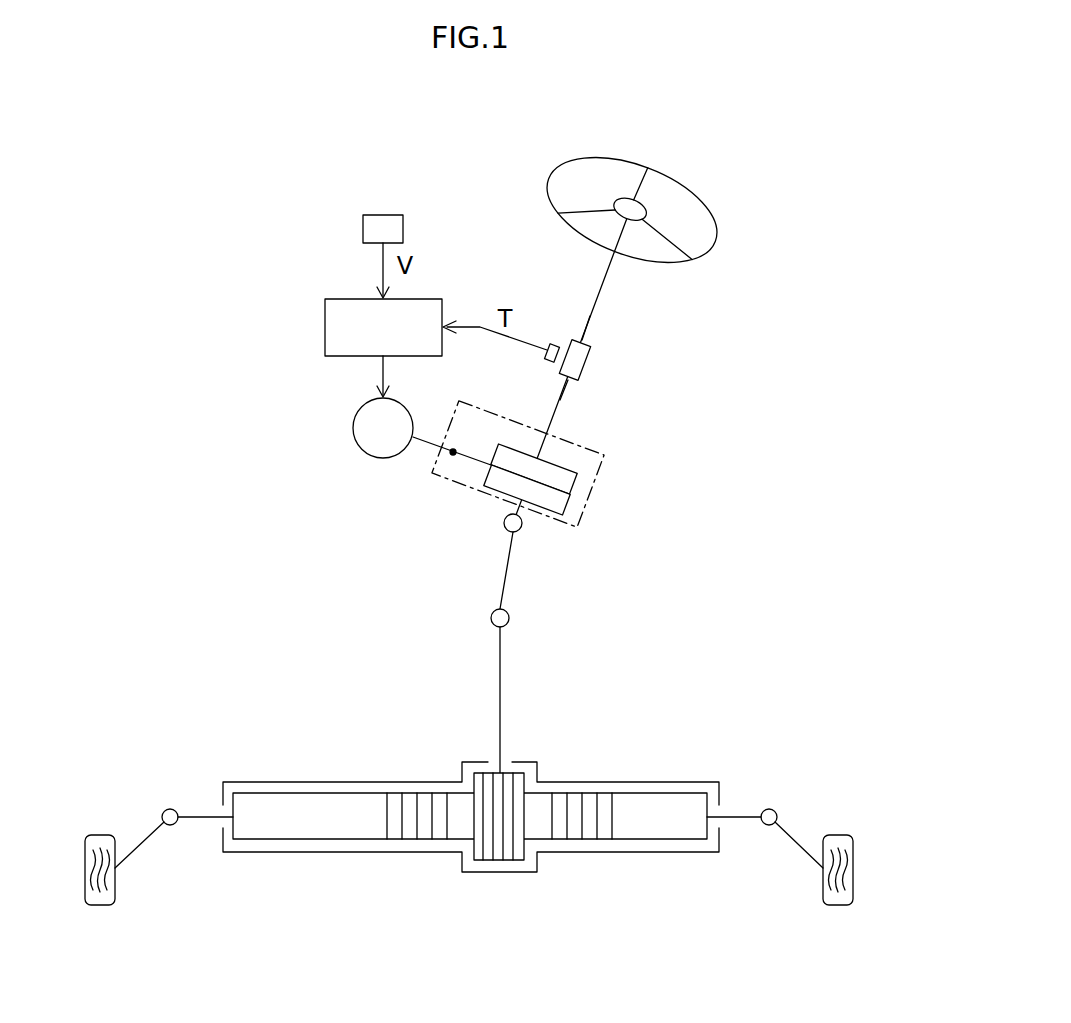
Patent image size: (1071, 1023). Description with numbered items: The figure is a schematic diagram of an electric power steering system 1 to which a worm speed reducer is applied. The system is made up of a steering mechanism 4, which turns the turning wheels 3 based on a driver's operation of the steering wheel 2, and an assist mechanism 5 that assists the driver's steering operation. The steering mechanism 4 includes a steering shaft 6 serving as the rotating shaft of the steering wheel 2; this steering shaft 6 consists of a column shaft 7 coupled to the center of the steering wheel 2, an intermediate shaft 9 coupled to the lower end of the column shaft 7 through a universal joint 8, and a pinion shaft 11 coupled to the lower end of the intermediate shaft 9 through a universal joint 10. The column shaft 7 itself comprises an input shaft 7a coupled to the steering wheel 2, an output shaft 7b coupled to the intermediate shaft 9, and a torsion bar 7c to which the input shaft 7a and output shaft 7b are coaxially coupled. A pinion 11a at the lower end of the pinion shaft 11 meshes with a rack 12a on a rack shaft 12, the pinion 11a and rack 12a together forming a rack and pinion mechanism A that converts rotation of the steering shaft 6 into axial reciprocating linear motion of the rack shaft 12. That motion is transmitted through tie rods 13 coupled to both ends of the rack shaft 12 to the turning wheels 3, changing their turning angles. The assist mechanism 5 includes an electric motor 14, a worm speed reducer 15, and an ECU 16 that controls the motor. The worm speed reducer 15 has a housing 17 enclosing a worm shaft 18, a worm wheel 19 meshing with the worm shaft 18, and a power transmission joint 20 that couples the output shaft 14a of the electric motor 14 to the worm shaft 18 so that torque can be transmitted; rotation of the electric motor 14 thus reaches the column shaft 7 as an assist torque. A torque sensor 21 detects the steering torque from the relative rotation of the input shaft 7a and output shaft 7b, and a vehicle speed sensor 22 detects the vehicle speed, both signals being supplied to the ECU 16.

The electric power steering system 1 is at (739, 158).
The steering wheel 2 is at (591, 158).
The turning wheels 3 is at (99, 906).
The steering mechanism 4 is at (733, 208).
The assist mechanism 5 is at (343, 405).
The steering shaft 6 is at (612, 283).
The column shaft 7 is at (659, 330).
The input shaft 7a is at (589, 330).
The output shaft 7b is at (567, 394).
The torsion bar 7c is at (584, 363).
The universal joint 8 is at (522, 531).
The intermediate shaft 9 is at (508, 573).
The universal joint 10 is at (510, 623).
The pinion shaft 11 is at (505, 714).
The pinion 11a is at (497, 861).
The rack shaft 12 is at (576, 846).
The rack 12a is at (435, 840).
The tie rods 13 is at (145, 848).
The electric motor 14 is at (382, 458).
The output shaft 14a is at (423, 441).
The worm speed reducer 15 is at (600, 525).
The electronic control unit 16 is at (325, 328).
The housing 17 is at (594, 447).
The worm shaft 18 is at (566, 461).
The worm wheel 19 is at (580, 496).
The power transmission joint 20 is at (463, 464).
The torque sensor 21 is at (553, 344).
The vehicle speed sensor 22 is at (363, 229).
The rack and pinion mechanism A is at (538, 879).